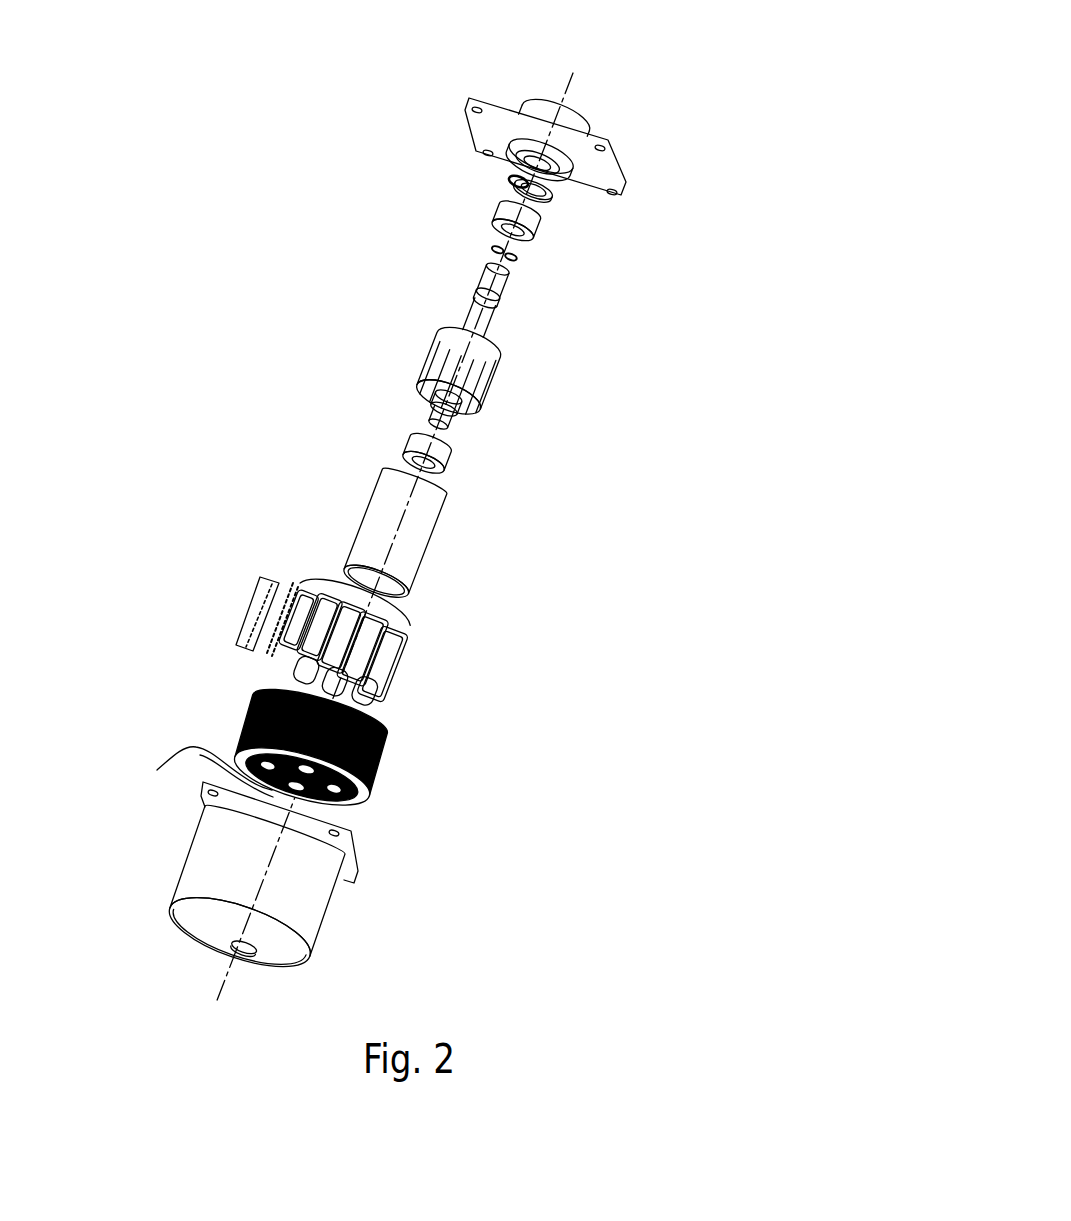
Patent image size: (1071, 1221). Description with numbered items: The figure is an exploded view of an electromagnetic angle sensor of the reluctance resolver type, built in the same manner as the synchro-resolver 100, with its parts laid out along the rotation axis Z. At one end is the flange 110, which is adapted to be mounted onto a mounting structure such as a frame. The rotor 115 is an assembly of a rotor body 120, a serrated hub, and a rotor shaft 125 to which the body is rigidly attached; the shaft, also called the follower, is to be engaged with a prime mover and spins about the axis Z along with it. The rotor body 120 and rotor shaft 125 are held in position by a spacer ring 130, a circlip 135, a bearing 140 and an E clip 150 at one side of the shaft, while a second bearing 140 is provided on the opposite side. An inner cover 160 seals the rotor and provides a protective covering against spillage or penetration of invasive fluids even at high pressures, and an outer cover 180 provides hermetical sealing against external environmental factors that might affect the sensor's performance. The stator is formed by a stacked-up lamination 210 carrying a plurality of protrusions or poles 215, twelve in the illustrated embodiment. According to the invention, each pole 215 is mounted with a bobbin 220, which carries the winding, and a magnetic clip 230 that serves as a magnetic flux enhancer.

The synchro-resolver 100 is at (434, 531).
The flange 110 is at (630, 178).
The rotor 115 is at (453, 360).
The rotor body 120 is at (495, 373).
The rotor shaft 125 is at (490, 317).
The spacer ring 130 is at (552, 220).
The circlip 135 is at (507, 175).
The bearing 140 is at (483, 223).
The E clip 150 is at (527, 266).
The inner cover 160 is at (445, 540).
The outer cover 180 is at (335, 900).
The stacked-up lamination 210 is at (385, 784).
The pole 215 is at (183, 772).
The bobbin 220 is at (240, 623).
The magnetic clip 230 is at (293, 578).